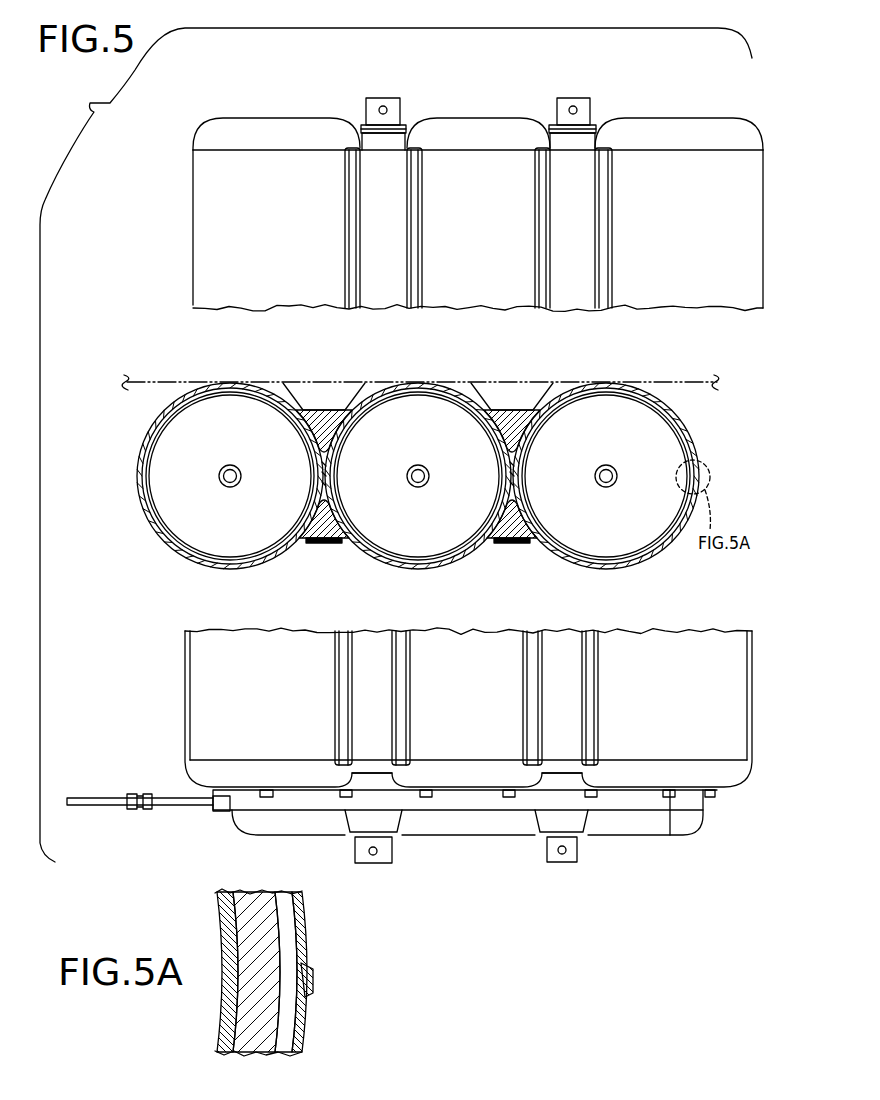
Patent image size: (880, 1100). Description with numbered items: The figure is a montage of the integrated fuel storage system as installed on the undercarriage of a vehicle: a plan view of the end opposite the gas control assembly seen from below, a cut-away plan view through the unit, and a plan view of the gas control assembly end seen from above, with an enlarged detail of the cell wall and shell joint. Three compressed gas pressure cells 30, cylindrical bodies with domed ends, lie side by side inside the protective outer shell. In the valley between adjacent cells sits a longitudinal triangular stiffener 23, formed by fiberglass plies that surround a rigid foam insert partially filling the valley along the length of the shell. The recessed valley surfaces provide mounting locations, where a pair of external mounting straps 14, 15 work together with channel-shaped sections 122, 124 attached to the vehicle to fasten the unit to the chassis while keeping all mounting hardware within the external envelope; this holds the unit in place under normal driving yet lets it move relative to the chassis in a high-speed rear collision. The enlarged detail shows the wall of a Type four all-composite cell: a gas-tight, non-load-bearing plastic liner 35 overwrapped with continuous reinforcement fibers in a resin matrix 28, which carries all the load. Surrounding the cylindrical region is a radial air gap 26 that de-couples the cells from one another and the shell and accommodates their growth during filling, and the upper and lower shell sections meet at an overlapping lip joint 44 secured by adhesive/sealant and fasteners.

In FIG. 5, the external mounting strap 14 is at (408, 92).
In FIG. 5, the external mounting strap 15 is at (600, 92).
In FIG. 5, the longitudinal triangular stiffener 23 is at (510, 530).
In FIG. 5, the compressed gas pressure cell 30 is at (162, 537).
In FIG. 5, the channel-shaped section 122 is at (330, 398).
In FIG. 5, the channel-shaped section 124 is at (512, 390).
In FIG. 5A, the radial air gap 26 is at (283, 918).
In FIG. 5A, the resin matrix 28 is at (236, 1024).
In FIG. 5A, the plastic liner 35 is at (222, 930).
In FIG. 5A, the overlapping lip joint 44 is at (310, 960).